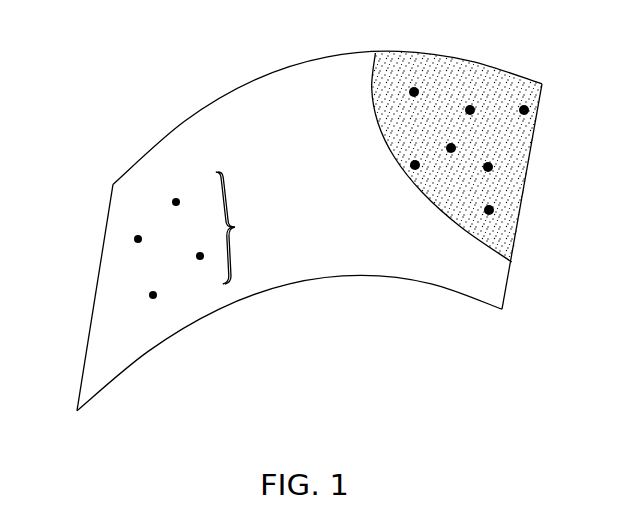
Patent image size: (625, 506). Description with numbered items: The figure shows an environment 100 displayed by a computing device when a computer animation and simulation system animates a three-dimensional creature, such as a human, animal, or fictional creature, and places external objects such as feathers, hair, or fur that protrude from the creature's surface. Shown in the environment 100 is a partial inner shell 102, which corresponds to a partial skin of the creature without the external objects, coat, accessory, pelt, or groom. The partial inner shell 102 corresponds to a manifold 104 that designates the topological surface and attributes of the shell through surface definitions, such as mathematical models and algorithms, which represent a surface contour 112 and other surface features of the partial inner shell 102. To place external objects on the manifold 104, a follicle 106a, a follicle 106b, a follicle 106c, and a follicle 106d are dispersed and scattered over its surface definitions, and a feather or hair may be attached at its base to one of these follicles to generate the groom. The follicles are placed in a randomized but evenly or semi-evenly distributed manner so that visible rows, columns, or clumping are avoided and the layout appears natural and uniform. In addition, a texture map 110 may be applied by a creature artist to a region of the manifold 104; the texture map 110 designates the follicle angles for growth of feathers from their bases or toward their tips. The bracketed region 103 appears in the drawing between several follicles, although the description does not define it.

The environment 100 is at (111, 64).
The partial inner shell 102 is at (334, 440).
The sensor spacing region 103 is at (243, 228).
The manifold 104 is at (287, 285).
The follicle 106a is at (130, 239).
The follicle 106b is at (175, 195).
The follicle 106c is at (157, 303).
The follicle 106d is at (192, 258).
The texture map 110 is at (522, 160).
The surface contour 112 is at (252, 82).